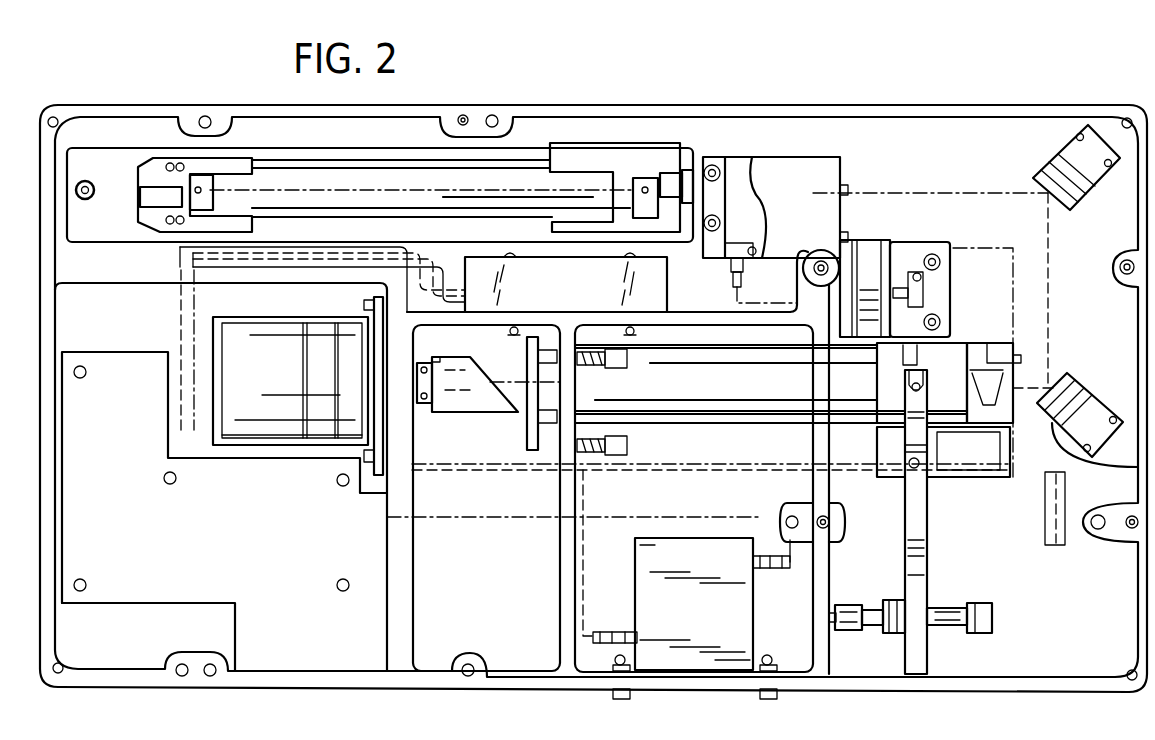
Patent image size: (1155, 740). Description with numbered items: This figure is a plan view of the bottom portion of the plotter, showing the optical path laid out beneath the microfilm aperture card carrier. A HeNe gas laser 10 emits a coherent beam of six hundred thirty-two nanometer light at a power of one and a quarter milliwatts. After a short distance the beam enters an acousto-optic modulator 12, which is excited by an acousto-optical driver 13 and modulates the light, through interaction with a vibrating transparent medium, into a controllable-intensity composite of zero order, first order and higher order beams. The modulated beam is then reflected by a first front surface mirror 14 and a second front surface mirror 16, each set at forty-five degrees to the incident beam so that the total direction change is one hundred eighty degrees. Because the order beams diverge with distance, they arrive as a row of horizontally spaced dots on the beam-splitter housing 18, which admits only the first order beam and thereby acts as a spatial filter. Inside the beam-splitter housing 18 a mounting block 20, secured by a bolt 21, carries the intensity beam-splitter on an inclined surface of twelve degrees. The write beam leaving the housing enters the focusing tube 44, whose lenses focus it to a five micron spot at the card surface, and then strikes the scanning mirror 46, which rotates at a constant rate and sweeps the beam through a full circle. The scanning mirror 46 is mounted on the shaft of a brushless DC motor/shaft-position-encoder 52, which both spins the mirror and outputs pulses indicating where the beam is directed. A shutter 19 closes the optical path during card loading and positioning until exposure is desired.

The HeNe gas laser 10 is at (367, 170).
The acousto-optic modulator 12 is at (770, 167).
The acousto-optical driver 13 is at (648, 555).
The first front surface mirror 14 is at (1057, 164).
The second front surface mirror 16 is at (1083, 381).
The beam-splitter housing 18 is at (955, 460).
The shutter 19 is at (918, 320).
The mounting block 20 is at (979, 340).
The bolt 21 is at (1020, 360).
The focusing tube 44 is at (678, 410).
The scanning mirror 46 is at (487, 378).
The brushless DC motor/shaft-position-encoder 52 is at (265, 323).